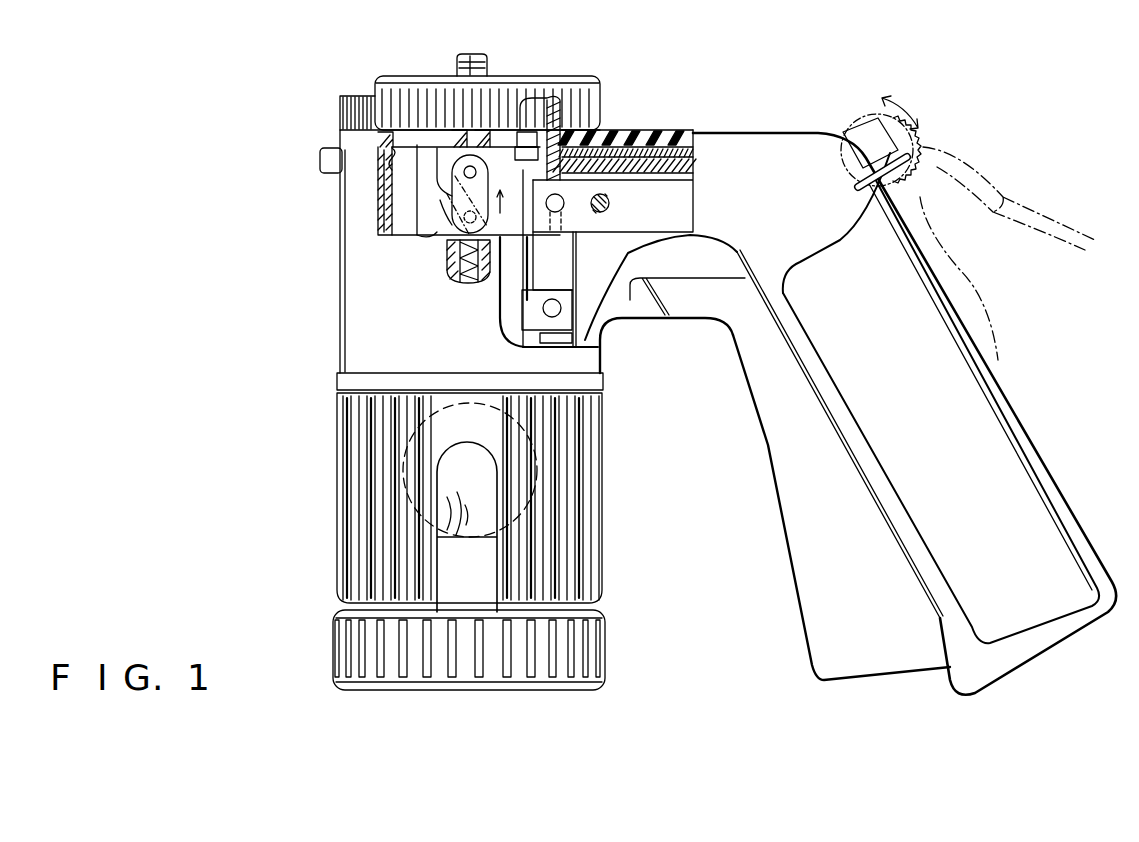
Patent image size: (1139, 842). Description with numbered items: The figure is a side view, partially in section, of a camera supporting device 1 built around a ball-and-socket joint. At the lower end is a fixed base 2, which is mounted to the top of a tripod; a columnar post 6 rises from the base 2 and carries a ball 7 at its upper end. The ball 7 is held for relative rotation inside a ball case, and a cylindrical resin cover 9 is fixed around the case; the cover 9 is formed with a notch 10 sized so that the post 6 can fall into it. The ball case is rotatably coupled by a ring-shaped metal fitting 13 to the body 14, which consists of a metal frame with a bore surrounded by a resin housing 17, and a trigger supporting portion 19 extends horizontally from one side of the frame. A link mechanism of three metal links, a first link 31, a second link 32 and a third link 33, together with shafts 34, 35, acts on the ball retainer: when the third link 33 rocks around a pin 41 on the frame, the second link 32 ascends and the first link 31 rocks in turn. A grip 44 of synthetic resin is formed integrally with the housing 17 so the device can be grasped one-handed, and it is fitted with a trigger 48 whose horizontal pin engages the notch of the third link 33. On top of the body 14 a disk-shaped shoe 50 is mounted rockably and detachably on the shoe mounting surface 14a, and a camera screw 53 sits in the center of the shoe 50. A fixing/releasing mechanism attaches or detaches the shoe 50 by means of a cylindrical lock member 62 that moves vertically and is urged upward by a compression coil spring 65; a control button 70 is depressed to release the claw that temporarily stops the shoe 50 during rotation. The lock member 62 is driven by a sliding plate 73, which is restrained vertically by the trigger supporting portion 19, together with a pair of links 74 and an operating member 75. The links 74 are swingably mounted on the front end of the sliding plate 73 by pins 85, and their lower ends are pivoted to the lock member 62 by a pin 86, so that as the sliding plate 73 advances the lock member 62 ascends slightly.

The camera supporting device 1 is at (758, 92).
The fixed base 2 is at (560, 690).
The columnar post 6 is at (480, 562).
The ball 7 is at (598, 443).
The cylindrical resin cover 9 is at (598, 478).
The notch 10 is at (502, 480).
The ring-shaped metal fitting 13 is at (590, 383).
The body 14 is at (606, 112).
The shoe mounting surface 14a is at (345, 124).
The resin housing 17 is at (338, 262).
The trigger supporting portion 19 is at (697, 166).
The first link 31 is at (563, 316).
The second link 32 is at (560, 268).
The third link 33 is at (682, 216).
The shaft 34 is at (505, 300).
The shaft 35 is at (565, 206).
The pin 41 is at (606, 197).
The grip 44 is at (1010, 430).
The trigger 48 is at (876, 680).
The disk-shaped shoe 50 is at (552, 76).
The camera screw 53 is at (474, 54).
The cylindrical lock member 62 is at (397, 140).
The compression coil spring 65 is at (468, 272).
The control button 70 is at (322, 168).
The sliding plate 73 is at (668, 148).
The links 74 is at (455, 196).
The operating member 75 is at (920, 140).
The pins 85 is at (478, 168).
The pin 86 is at (466, 220).